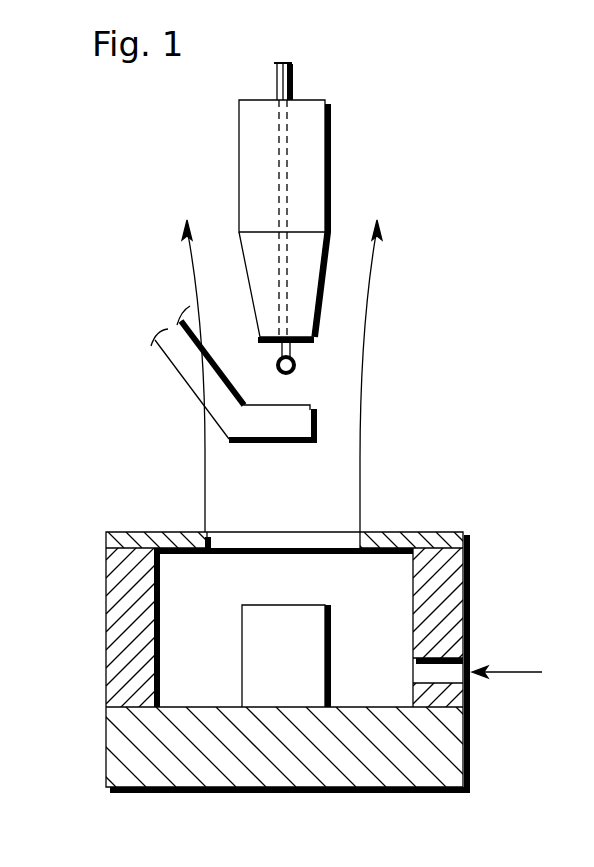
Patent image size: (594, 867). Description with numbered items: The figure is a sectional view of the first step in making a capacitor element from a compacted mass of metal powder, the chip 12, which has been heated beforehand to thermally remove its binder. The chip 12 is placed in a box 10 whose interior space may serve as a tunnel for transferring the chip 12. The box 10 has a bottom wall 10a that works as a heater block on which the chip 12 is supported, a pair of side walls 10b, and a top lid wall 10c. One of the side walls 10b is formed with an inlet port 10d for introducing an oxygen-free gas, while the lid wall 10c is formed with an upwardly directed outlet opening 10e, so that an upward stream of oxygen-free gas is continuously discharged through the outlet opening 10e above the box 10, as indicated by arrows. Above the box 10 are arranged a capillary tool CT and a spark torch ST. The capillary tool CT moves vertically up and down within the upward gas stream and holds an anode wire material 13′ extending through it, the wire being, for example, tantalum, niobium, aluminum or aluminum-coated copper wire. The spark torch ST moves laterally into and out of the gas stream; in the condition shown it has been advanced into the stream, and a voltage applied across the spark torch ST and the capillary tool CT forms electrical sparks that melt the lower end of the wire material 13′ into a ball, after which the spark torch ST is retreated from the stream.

The box 10 is at (460, 520).
The bottom wall 10a is at (193, 757).
The side walls 10b is at (455, 596).
The top lid wall 10c is at (400, 541).
The inlet port 10d is at (442, 657).
The outlet opening 10e is at (356, 551).
The chip 12 is at (317, 657).
The anode wire material 13′ is at (293, 83).
The capillary tool CT is at (312, 155).
The spark torch ST is at (172, 358).